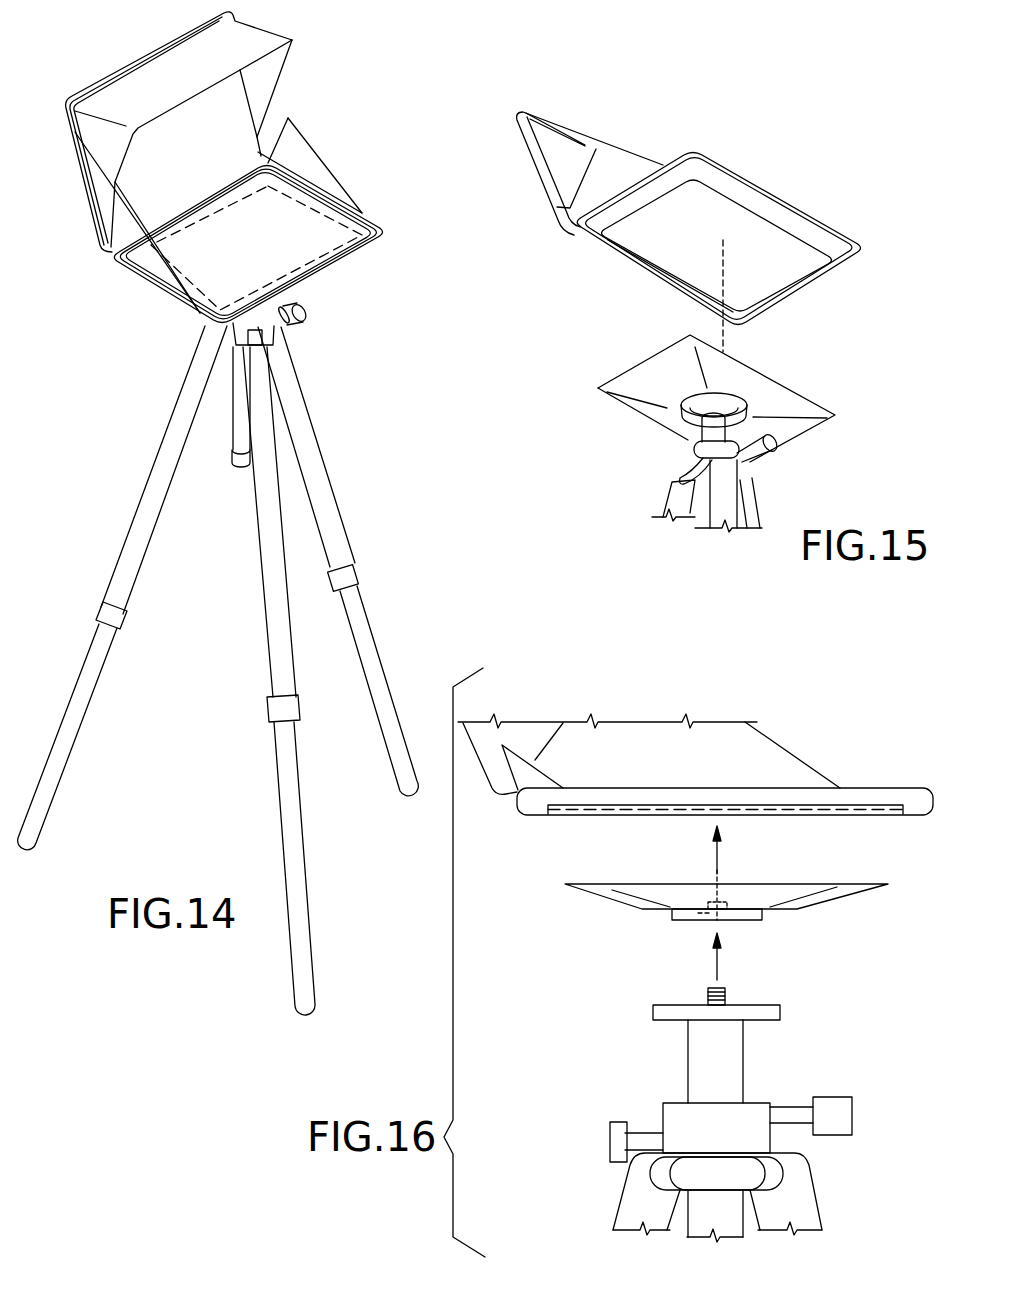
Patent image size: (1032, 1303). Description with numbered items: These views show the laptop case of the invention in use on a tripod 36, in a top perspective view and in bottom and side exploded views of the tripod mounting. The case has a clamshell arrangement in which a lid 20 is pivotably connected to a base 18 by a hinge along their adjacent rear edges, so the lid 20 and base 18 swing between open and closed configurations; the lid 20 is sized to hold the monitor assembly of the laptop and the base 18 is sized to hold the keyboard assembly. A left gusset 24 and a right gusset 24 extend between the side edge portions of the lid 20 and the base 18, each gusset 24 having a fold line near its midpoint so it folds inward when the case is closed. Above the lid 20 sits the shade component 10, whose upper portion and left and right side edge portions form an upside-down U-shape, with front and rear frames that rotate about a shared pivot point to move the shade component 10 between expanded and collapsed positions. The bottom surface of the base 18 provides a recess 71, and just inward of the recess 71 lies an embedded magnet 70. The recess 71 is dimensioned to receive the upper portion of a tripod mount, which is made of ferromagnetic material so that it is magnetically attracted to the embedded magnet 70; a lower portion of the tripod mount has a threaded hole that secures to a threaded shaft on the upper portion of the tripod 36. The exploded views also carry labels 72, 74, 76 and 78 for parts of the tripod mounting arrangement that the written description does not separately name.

In FIG. 14, the shade component 10 is at (130, 80).
In FIG. 14, the base 18 is at (370, 217).
In FIG. 15, the base 18 is at (733, 168).
In FIG. 16, the base 18 is at (532, 813).
In FIG. 15, the lid 20 is at (522, 133).
In FIG. 14, the gusset 24 is at (288, 118).
In FIG. 15, the gusset 24 is at (608, 157).
In FIG. 16, the gusset 24 is at (780, 757).
In FIG. 16, the tripod 36 is at (637, 1218).
In FIG. 14, the embedded magnet 70 is at (350, 257).
In FIG. 16, the embedded magnet 70 is at (863, 807).
In FIG. 15, the recess 71 is at (785, 235).
In FIG. 15, the mounting plate 72 is at (645, 414).
In FIG. 16, the mounting plate 72 is at (836, 893).
In FIG. 16, the mounting plate boss 74 is at (693, 917).
In FIG. 14, the tripod 76 is at (330, 500).
In FIG. 16, the mounting screw 78 is at (737, 990).